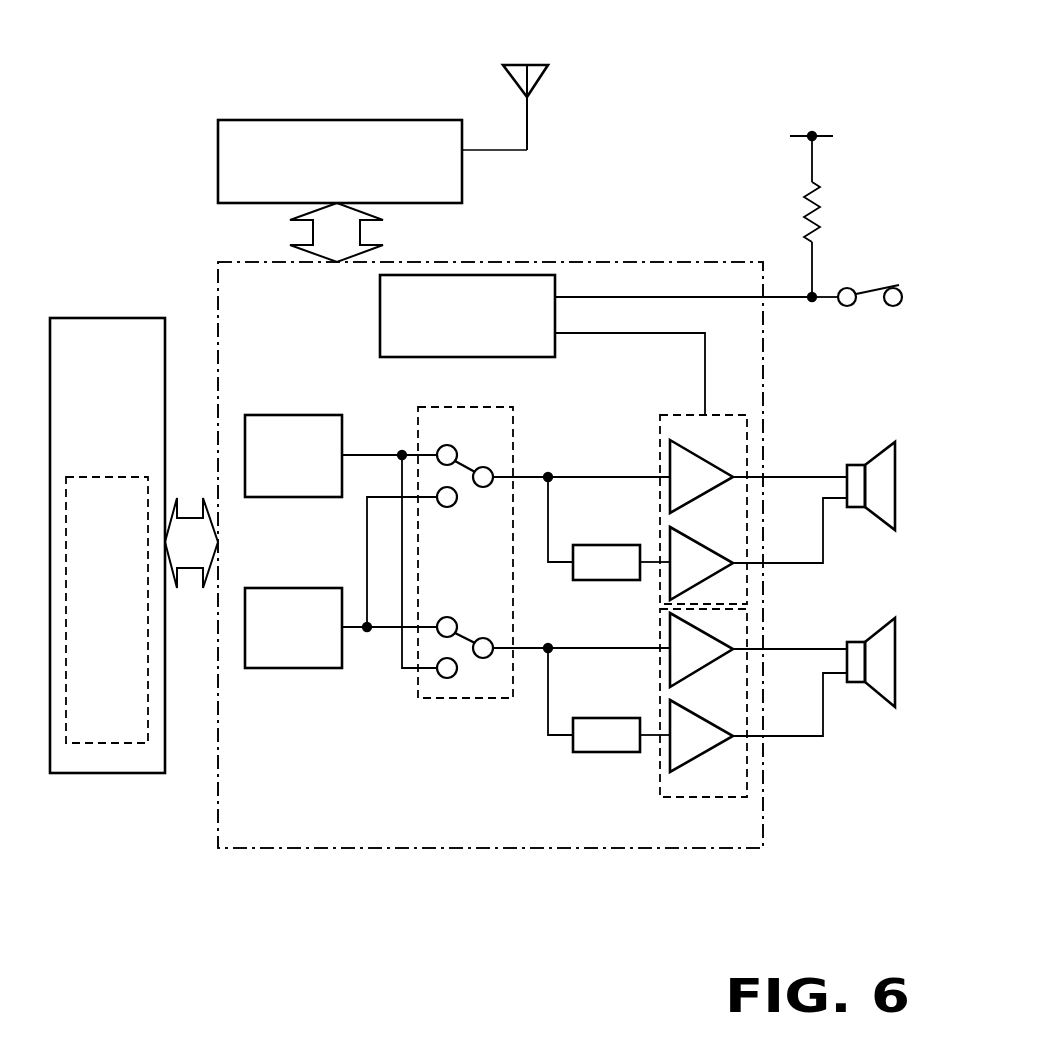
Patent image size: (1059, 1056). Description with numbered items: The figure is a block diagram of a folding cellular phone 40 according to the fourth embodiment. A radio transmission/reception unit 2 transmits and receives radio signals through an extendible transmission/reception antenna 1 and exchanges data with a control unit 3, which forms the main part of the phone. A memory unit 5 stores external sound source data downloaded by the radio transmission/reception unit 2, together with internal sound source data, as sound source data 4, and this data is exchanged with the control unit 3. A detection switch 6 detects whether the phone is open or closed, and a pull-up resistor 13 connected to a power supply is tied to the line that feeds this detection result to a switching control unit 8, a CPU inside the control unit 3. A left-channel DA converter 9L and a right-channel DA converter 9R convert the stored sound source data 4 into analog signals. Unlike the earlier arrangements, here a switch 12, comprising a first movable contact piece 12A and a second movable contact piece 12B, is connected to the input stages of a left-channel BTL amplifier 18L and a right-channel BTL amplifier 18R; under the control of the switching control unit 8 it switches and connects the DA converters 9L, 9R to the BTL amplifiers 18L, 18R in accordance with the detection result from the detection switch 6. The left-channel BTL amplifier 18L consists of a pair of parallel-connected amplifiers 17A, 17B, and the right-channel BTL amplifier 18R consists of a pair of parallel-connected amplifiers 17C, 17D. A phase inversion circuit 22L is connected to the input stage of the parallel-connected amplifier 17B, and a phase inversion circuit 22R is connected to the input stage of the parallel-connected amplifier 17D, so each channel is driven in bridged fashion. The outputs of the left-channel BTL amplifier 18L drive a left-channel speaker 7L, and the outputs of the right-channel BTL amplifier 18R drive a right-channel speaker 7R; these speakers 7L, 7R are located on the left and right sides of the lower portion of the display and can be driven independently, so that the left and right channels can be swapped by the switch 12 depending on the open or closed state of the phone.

The transmission/reception antenna 1 is at (541, 80).
The radio transmission/reception unit 2 is at (301, 120).
The control unit 3 is at (257, 850).
The sound source data 4 is at (100, 477).
The memory unit 5 is at (68, 318).
The detection switch 6 is at (873, 286).
The left-channel speaker 7L is at (858, 465).
The right-channel speaker 7R is at (858, 642).
The switching control unit 8 is at (380, 302).
The left-channel DA converter 9L is at (265, 415).
The right-channel DA converter 9R is at (265, 588).
The switch 12 is at (503, 407).
The first movable contact piece 12A is at (465, 465).
The second movable contact piece 12B is at (465, 636).
The pull-up resistor 13 is at (826, 200).
The parallel-connected amplifier 17A is at (709, 462).
The parallel-connected amplifier 17B is at (709, 549).
The parallel-connected amplifier 17C is at (709, 666).
The parallel-connected amplifier 17D is at (709, 752).
The left-channel BTL amplifier 18L is at (660, 430).
The right-channel BTL amplifier 18R is at (684, 798).
The phase inversion circuit 22L is at (592, 582).
The phase inversion circuit 22R is at (592, 754).
The folding cellular phone 40 is at (724, 130).